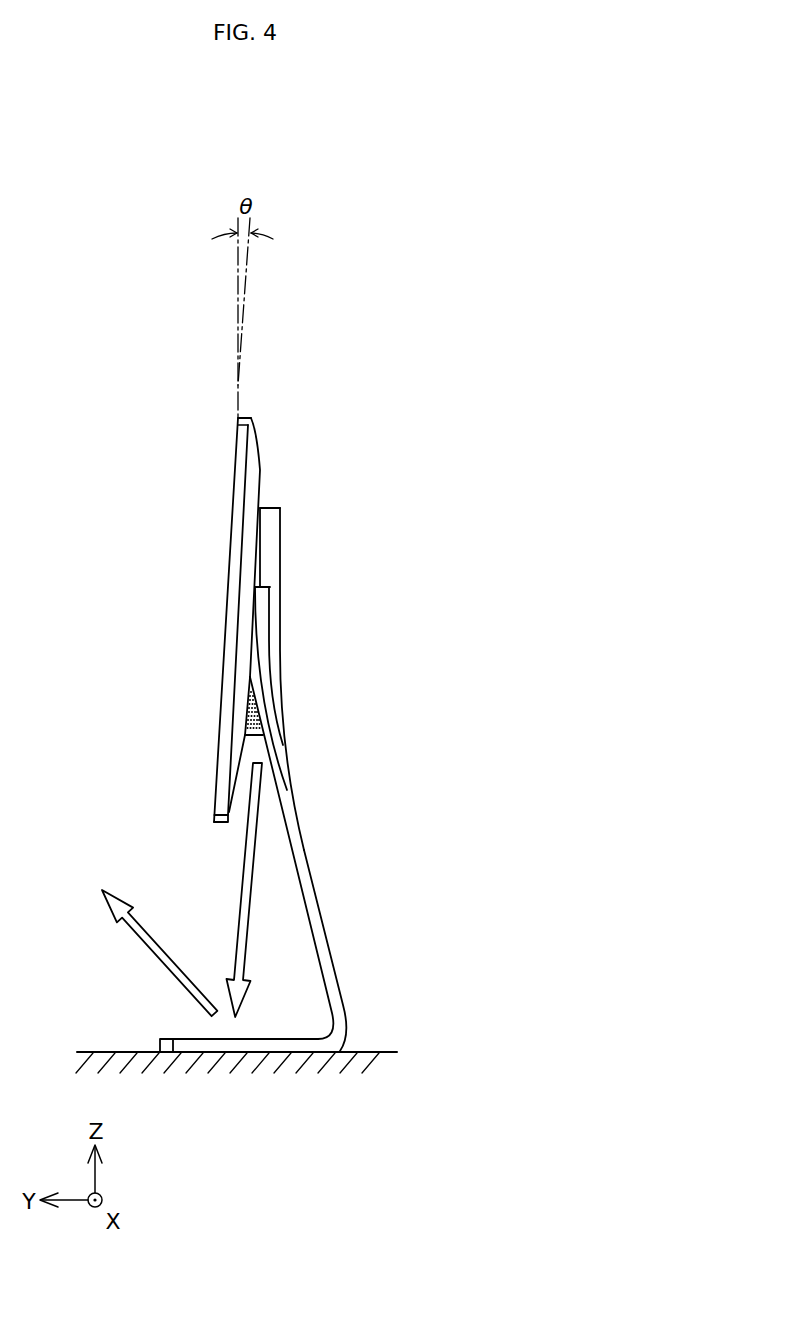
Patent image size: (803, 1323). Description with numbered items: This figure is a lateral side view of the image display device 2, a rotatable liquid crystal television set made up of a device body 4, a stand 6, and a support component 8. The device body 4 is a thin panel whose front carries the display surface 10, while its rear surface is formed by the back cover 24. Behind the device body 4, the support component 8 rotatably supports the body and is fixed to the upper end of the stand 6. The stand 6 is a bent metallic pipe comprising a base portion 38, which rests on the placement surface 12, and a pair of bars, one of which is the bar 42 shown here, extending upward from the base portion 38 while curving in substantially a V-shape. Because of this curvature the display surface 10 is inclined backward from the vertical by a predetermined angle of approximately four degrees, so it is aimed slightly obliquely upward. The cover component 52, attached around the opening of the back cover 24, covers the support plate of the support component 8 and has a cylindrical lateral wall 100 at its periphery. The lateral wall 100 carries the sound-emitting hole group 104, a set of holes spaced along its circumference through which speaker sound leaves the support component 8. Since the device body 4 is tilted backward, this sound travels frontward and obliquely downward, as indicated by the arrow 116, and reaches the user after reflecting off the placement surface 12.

The image display device 2 is at (366, 405).
The device body 4 is at (234, 468).
The display surface 10 is at (226, 567).
The back cover 24 is at (256, 466).
The stand 6 is at (320, 874).
The lateral wall 100 is at (273, 520).
The support component 8 is at (284, 554).
The cover component 52 is at (271, 578).
The sound-emitting hole group 104 is at (261, 702).
The bar 42 is at (303, 830).
The base portion 38 is at (270, 1039).
The placement surface 12 is at (103, 1052).
The arrow 116 is at (158, 940).